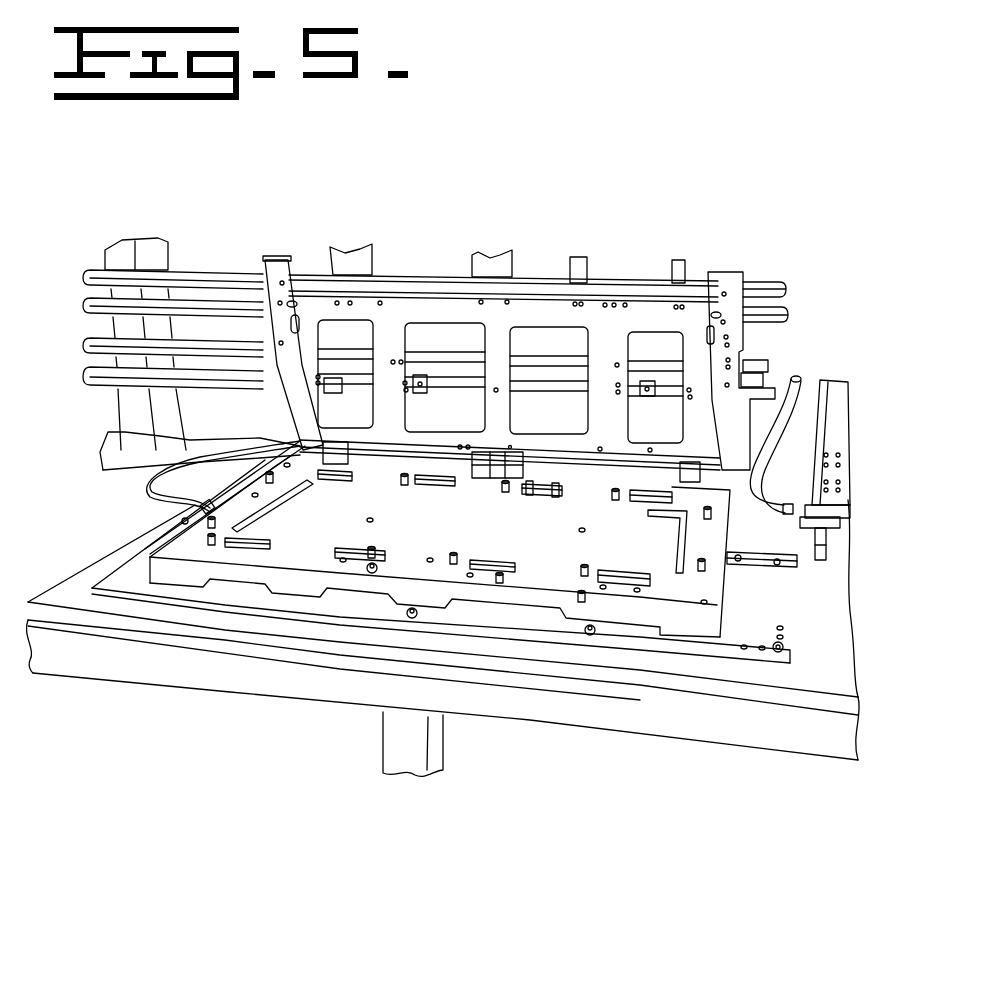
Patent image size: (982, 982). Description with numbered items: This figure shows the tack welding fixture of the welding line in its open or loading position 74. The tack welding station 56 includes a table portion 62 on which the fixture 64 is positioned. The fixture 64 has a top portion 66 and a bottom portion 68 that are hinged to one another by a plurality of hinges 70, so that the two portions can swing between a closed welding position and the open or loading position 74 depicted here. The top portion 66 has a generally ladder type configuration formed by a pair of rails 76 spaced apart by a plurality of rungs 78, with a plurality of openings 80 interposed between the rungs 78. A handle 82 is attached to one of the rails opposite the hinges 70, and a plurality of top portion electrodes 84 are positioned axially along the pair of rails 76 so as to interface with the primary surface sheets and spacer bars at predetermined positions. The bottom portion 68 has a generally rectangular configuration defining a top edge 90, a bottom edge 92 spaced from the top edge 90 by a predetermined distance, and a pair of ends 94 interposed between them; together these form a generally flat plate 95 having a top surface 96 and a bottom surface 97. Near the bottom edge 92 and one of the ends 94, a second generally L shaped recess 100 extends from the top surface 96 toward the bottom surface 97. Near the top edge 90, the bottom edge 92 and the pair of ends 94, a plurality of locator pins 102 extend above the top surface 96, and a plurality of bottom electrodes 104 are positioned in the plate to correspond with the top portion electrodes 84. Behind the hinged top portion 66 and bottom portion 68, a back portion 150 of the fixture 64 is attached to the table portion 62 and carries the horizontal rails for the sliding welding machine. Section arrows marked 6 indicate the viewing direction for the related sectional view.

The tack welding station 56 is at (478, 820).
The table portion 62 is at (150, 670).
The fixture 64 is at (325, 778).
The top portion 66 is at (743, 343).
The bottom portion 68 is at (733, 583).
The hinges 70 is at (468, 474).
The open or loading position 74 is at (760, 245).
The pair of rails 76 is at (398, 310).
The rungs 78 is at (615, 405).
The openings 80 is at (457, 348).
The handle 82 is at (505, 270).
The top portion electrodes 84 is at (508, 302).
The top edge 90 is at (571, 472).
The bottom edge 92 is at (545, 597).
The pair of ends 94 is at (140, 537).
The generally flat plate 95 is at (650, 557).
The top surface 96 is at (640, 600).
The bottom surface 97 is at (655, 627).
The second generally L shaped recess 100 is at (685, 605).
The locator pins 102 is at (344, 558).
The bottom electrodes 104 is at (375, 566).
The back portion 150 is at (185, 270).
The section line 6 is at (457, 537).